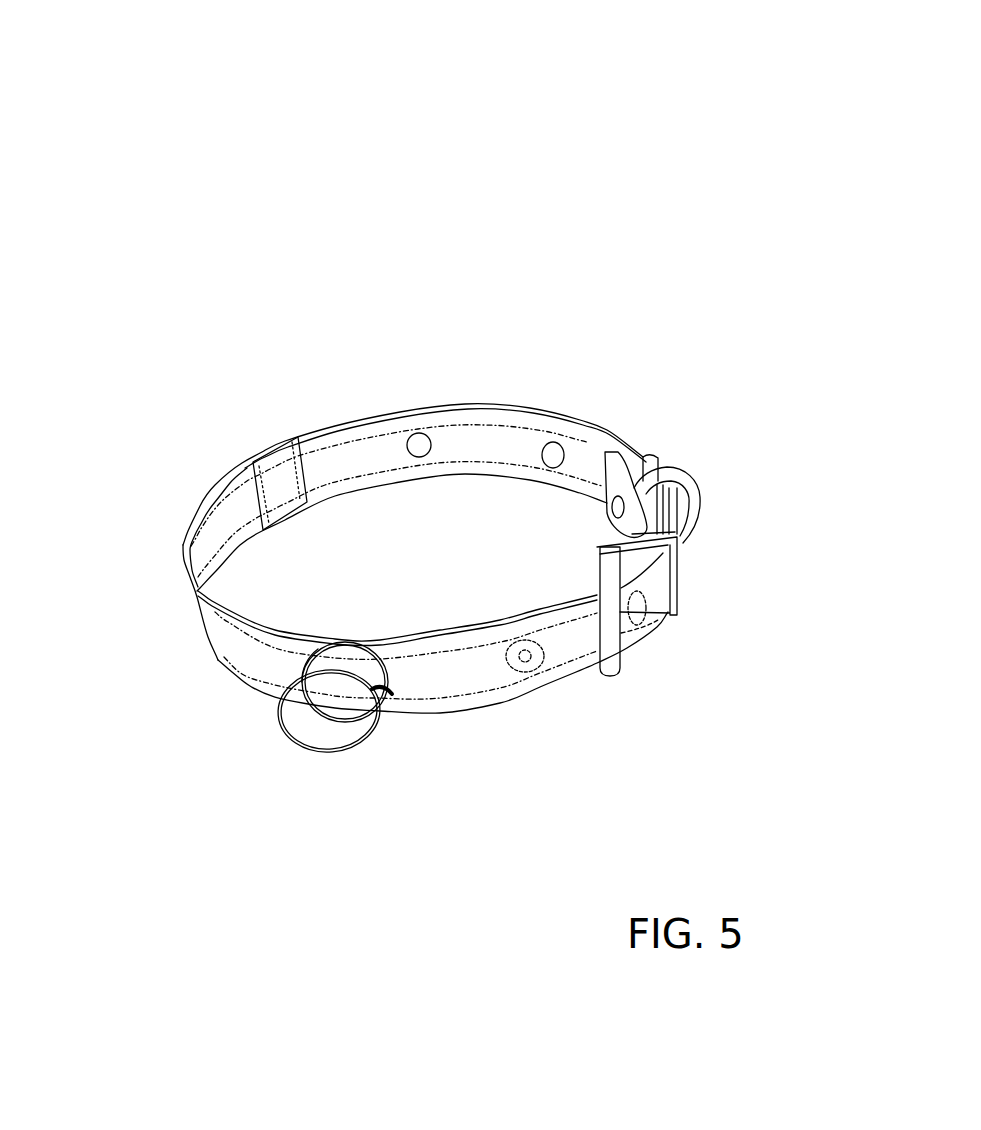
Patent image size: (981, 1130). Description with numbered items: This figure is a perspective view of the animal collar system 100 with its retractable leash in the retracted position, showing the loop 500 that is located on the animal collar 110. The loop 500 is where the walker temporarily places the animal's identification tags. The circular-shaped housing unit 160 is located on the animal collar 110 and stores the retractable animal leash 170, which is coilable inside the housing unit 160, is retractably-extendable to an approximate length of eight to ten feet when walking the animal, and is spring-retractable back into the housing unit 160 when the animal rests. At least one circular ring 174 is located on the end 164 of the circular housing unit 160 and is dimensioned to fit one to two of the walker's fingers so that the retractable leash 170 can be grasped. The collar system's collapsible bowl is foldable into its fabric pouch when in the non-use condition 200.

The animal collar system 100 is at (630, 64).
The non-use condition 200 is at (641, 126).
The animal collar 110 is at (346, 410).
The loop 500 is at (714, 503).
The circular-shaped housing unit 160 is at (369, 665).
The end 164 is at (288, 665).
The retractable animal leash 170 is at (395, 697).
The circular ring 174 is at (268, 725).